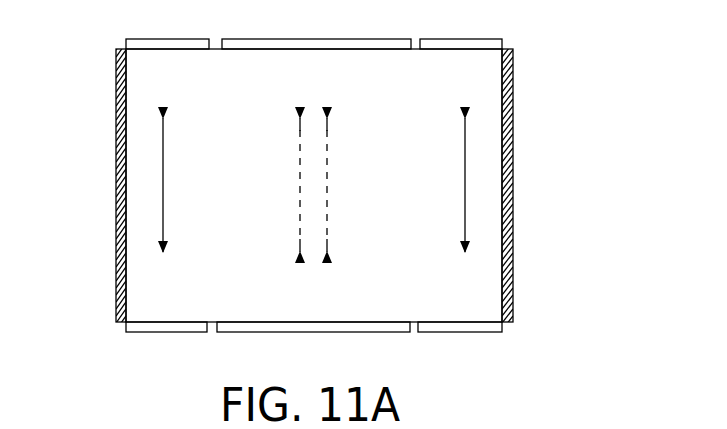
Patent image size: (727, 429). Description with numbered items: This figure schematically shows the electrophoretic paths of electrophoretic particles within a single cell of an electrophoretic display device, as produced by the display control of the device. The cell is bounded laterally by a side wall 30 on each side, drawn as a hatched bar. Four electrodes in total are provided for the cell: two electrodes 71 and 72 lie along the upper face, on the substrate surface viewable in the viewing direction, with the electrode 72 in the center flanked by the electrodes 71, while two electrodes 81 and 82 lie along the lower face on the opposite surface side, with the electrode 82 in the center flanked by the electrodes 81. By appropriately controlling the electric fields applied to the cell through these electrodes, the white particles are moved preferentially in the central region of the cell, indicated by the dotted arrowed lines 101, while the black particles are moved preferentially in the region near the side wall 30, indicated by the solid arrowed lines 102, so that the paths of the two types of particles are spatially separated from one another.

The side wall 30 is at (121, 49).
The electrode 71 is at (153, 39).
The electrode 72 is at (320, 39).
The electrode 81 is at (175, 333).
The electrode 82 is at (267, 333).
The dotted arrowed lines 101 is at (313, 171).
The solid arrowed lines 102 is at (315, 201).